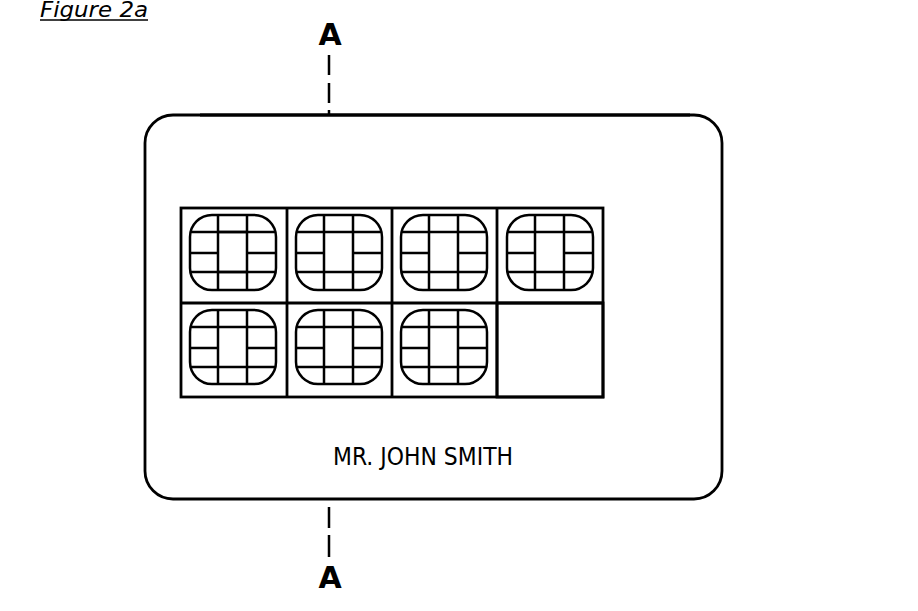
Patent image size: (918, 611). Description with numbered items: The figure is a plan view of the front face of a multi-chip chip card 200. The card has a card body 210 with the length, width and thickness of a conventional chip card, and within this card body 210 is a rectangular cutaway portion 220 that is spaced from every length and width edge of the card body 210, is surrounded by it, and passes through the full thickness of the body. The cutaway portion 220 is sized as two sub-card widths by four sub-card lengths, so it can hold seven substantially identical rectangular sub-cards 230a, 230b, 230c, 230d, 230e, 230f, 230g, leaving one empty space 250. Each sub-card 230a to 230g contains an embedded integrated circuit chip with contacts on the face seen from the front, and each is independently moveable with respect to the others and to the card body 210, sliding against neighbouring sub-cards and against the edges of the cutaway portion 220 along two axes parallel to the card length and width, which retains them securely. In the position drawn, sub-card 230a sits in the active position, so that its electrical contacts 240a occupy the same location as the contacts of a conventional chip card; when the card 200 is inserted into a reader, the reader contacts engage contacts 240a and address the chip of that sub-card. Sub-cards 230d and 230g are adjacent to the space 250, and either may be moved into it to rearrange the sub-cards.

The multi-chip chip card 200 is at (702, 95).
The card body 210 is at (565, 113).
The cutaway portion 220 is at (603, 315).
The sub-card 230a is at (235, 207).
The sub-card 230b is at (340, 207).
The sub-card 230c is at (445, 207).
The sub-card 230d is at (550, 207).
The sub-card 230e is at (233, 398).
The sub-card 230f is at (340, 398).
The sub-card 230g is at (445, 398).
The electrical contacts 240a is at (235, 253).
The space 250 is at (580, 375).